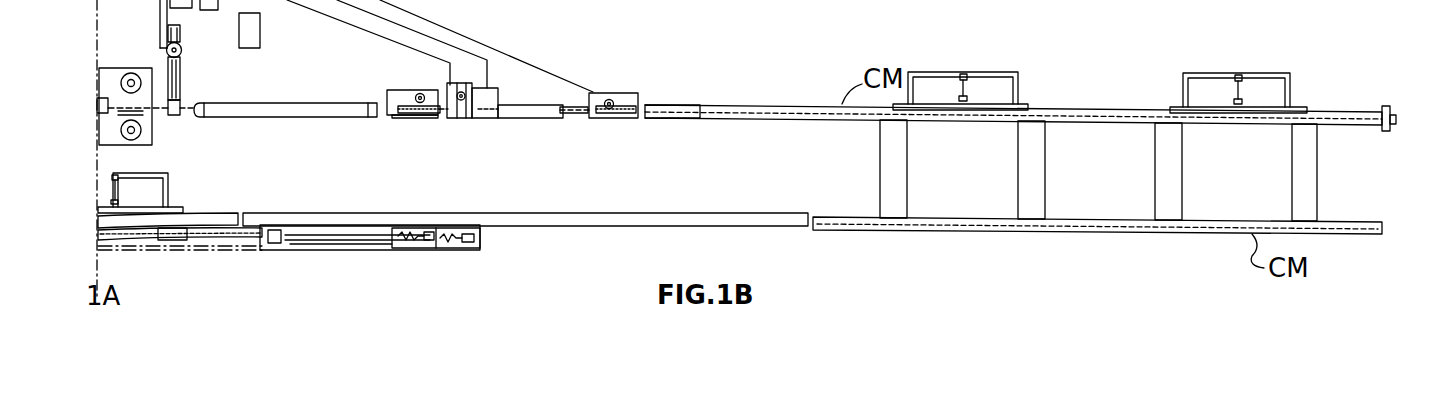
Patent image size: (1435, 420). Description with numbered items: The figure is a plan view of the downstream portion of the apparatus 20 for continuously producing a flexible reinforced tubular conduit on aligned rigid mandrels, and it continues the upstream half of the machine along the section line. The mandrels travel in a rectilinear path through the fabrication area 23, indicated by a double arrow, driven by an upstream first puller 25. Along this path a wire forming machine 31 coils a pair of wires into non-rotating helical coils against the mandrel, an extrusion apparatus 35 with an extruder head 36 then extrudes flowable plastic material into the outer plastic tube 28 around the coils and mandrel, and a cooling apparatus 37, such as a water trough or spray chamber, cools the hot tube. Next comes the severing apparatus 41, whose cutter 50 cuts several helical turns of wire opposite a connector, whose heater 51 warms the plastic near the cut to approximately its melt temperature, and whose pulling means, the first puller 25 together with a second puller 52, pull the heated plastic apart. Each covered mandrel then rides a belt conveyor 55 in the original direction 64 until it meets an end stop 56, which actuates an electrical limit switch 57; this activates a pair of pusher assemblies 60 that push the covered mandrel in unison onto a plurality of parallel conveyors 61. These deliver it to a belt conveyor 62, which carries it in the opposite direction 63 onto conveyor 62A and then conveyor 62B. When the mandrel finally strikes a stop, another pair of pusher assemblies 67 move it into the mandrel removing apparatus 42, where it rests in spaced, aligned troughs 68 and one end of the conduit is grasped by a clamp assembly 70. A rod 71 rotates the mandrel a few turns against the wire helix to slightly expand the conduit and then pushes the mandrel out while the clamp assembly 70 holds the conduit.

The apparatus 20 is at (796, 82).
The fabrication area 23 is at (380, 118).
The first puller 25 is at (407, 92).
The outer plastic tube 28 is at (181, 78).
The wire forming machine 31 is at (120, 66).
The extrusion apparatus 35 is at (246, 56).
The extruder head 36 is at (174, 115).
The cooling apparatus 37 is at (285, 103).
The severing apparatus 41 is at (577, 66).
The mandrel removing apparatus 42 is at (362, 254).
The cutter 50 is at (462, 118).
The heater 51 is at (500, 97).
The second puller 52 is at (628, 93).
The belt conveyor 55 is at (722, 104).
The end stop 56 is at (1387, 106).
The electrical limit switch 57 is at (1396, 124).
The pusher assemblies 60 is at (984, 72).
The parallel conveyors 61 is at (886, 164).
The belt conveyor 62 is at (1103, 233).
The conveyor 62A is at (643, 213).
The conveyor 62B is at (234, 213).
The direction 63 is at (885, 244).
The direction 64 is at (1090, 97).
The pusher assemblies 67 is at (170, 187).
The troughs 68 is at (172, 242).
The clamp assembly 70 is at (272, 230).
The rod 71 is at (322, 236).